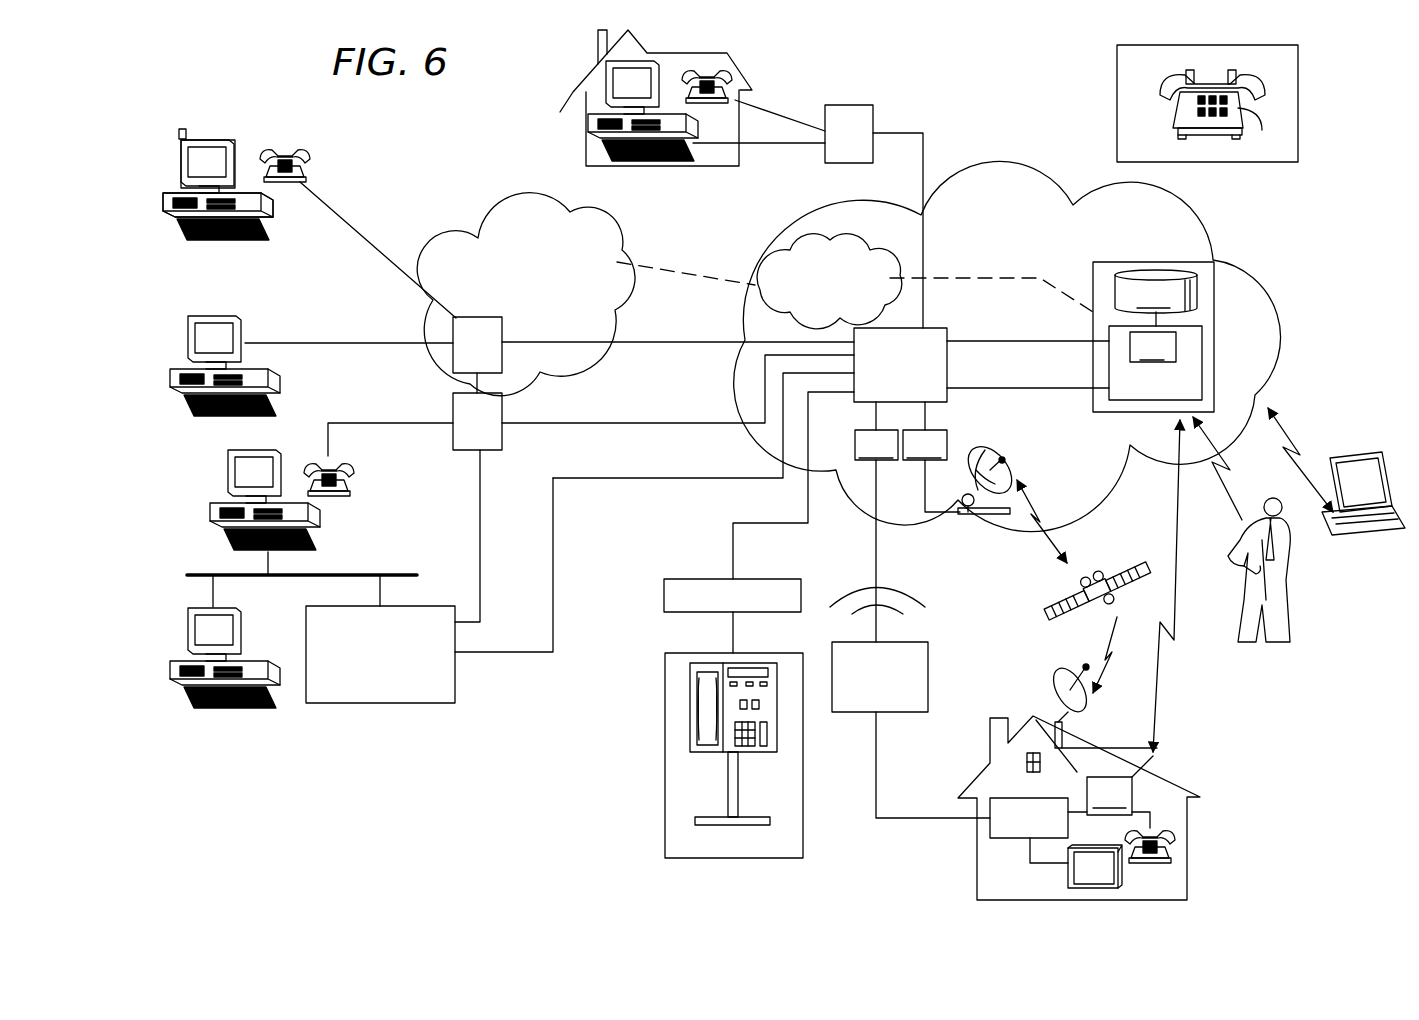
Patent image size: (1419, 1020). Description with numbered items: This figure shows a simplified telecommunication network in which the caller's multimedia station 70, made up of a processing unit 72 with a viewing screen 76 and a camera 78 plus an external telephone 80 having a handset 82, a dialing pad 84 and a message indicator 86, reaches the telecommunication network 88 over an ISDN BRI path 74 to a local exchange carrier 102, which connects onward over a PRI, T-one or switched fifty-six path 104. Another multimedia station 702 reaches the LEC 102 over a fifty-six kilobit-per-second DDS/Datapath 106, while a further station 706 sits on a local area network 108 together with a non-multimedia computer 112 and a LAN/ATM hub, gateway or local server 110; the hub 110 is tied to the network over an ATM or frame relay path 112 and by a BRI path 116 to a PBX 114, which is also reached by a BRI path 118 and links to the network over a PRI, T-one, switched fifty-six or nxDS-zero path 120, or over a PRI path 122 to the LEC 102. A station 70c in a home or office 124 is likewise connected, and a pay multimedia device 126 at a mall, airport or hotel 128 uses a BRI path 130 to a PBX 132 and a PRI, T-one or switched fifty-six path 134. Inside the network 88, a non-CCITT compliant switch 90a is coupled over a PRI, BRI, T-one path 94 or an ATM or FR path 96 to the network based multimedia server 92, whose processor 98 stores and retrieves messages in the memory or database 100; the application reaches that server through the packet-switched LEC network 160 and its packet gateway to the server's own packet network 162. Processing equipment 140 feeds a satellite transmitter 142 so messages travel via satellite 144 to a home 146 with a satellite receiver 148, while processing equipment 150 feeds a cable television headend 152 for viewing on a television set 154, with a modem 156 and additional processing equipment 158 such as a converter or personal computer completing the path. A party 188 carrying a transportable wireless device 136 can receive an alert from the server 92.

The multimedia station 70 is at (178, 142).
The processing unit 72 is at (170, 200).
The ISDN BRI path 74 is at (356, 243).
The viewing screen 76 is at (180, 166).
The camera 78 is at (182, 139).
The telephone 80 is at (300, 152).
The handset 82 is at (1266, 60).
The dialing pad 84 is at (1192, 104).
The message indicator 86 is at (1257, 133).
The telecommunication network 88 is at (1210, 222).
The non-CCITT compliant switch 90a is at (936, 330).
The network based multimedia server 92 is at (1138, 400).
The PRI, BRI, T1 path 94 is at (1066, 342).
The ATM or FR path 96 is at (983, 378).
The processor 98 is at (1153, 337).
The memory 100 is at (1156, 291).
The Local Exchange Carrier 102 is at (477, 317).
The PRI, T1 or SW56 path 104 is at (682, 344).
The DDS/Datapath 106 is at (336, 345).
The local area network 108 is at (190, 572).
The LAN/ATM hub, gateway or local server 110 is at (374, 705).
The non-multimedia computer 112 is at (192, 628).
The PBX 114 is at (457, 453).
The BRI path 116 is at (479, 537).
The BRI path 118 is at (324, 430).
The PRI, T1, SW56 or nxDS-0 path 120 is at (572, 428).
The PRI path 122 is at (508, 390).
The home or office 124 is at (727, 66).
The pay multimedia device 126 is at (694, 700).
The mall, airport or hotel 128 is at (666, 786).
The BRI path 130 is at (733, 633).
The PBX 132 is at (664, 593).
The PRI, T1 or SW56 path 134 is at (733, 566).
The transportable wireless device 136 is at (1288, 564).
The processing equipment 140 is at (931, 457).
The satellite transmitter 142 is at (1008, 468).
The satellite 144 is at (1118, 568).
The home 146 is at (1187, 876).
The satellite receiver 148 is at (1060, 674).
The processing equipment 150 is at (876, 431).
The cable television headend 152 is at (874, 754).
The television set 154 is at (1066, 876).
The multimedia capable modem 156 is at (1110, 792).
The additional processing equipment 158 is at (992, 798).
The X.25 LEC network 160 is at (584, 214).
The X.25 network 162 is at (845, 250).
The mobile user 188 is at (1360, 456).
The computer 702 is at (194, 318).
The computer 706 is at (228, 470).
The multimedia station 70c is at (588, 104).